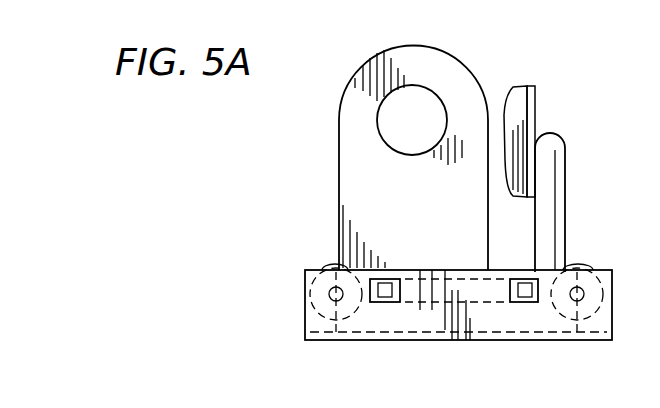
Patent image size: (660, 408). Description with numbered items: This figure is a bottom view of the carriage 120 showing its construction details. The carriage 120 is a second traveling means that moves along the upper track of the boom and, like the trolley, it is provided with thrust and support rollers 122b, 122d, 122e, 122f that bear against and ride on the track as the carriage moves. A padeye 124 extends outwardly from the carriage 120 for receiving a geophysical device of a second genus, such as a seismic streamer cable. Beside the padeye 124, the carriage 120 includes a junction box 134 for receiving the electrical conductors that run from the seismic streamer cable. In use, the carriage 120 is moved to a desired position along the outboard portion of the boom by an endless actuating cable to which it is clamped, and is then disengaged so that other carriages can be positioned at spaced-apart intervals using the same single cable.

The carriage 120 is at (306, 315).
The thrust and support roller 122b is at (581, 266).
The thrust and support roller 122d is at (332, 266).
The thrust and support roller 122e is at (522, 300).
The thrust and support roller 122f is at (378, 300).
The padeye 124 is at (339, 185).
The junction box 134 is at (520, 118).